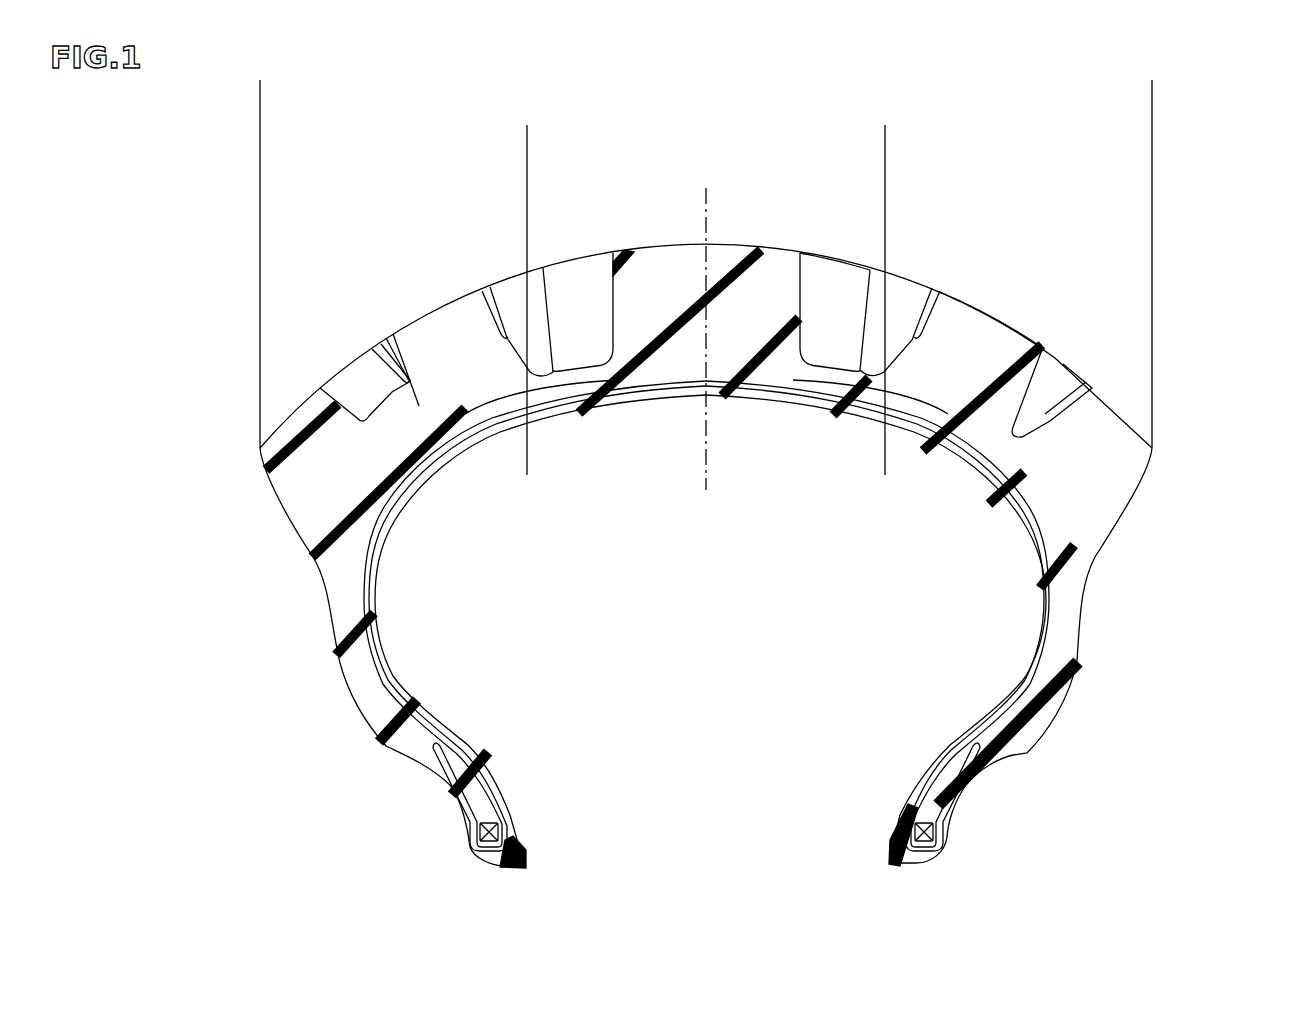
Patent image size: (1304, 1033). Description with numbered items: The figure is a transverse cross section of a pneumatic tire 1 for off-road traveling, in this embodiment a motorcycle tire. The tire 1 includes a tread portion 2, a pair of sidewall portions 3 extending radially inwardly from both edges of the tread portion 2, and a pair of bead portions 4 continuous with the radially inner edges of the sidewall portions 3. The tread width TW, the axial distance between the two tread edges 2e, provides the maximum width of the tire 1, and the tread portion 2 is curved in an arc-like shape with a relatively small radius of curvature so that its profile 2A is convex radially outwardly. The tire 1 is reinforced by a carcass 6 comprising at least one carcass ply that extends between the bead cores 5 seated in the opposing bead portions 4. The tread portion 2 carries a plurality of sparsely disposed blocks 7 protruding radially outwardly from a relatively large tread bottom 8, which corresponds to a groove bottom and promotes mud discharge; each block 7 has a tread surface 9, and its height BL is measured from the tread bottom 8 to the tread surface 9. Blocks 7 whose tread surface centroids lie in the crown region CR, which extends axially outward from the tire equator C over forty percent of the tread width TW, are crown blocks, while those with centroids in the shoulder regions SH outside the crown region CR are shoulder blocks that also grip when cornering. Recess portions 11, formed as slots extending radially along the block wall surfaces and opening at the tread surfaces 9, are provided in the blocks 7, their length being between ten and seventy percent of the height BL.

The pneumatic tire 1 is at (1058, 280).
The tread portion 2 is at (450, 296).
The tread surface 2A is at (820, 258).
The tread edge 2e is at (262, 448).
The sidewall portion 3 is at (330, 690).
The bead portion 4 is at (445, 817).
The bead core 5 is at (497, 830).
The carcass 6 is at (452, 726).
The block 7 is at (300, 410).
The tread bottom 8 is at (483, 415).
The tread surface 9 is at (995, 318).
The recess portion 11 is at (375, 347).
The height of the block BL is at (438, 314).
The tread width TW is at (260, 88).
The shoulder region SH is at (527, 132).
The crown region CR is at (527, 132).
The tire equator C is at (706, 325).